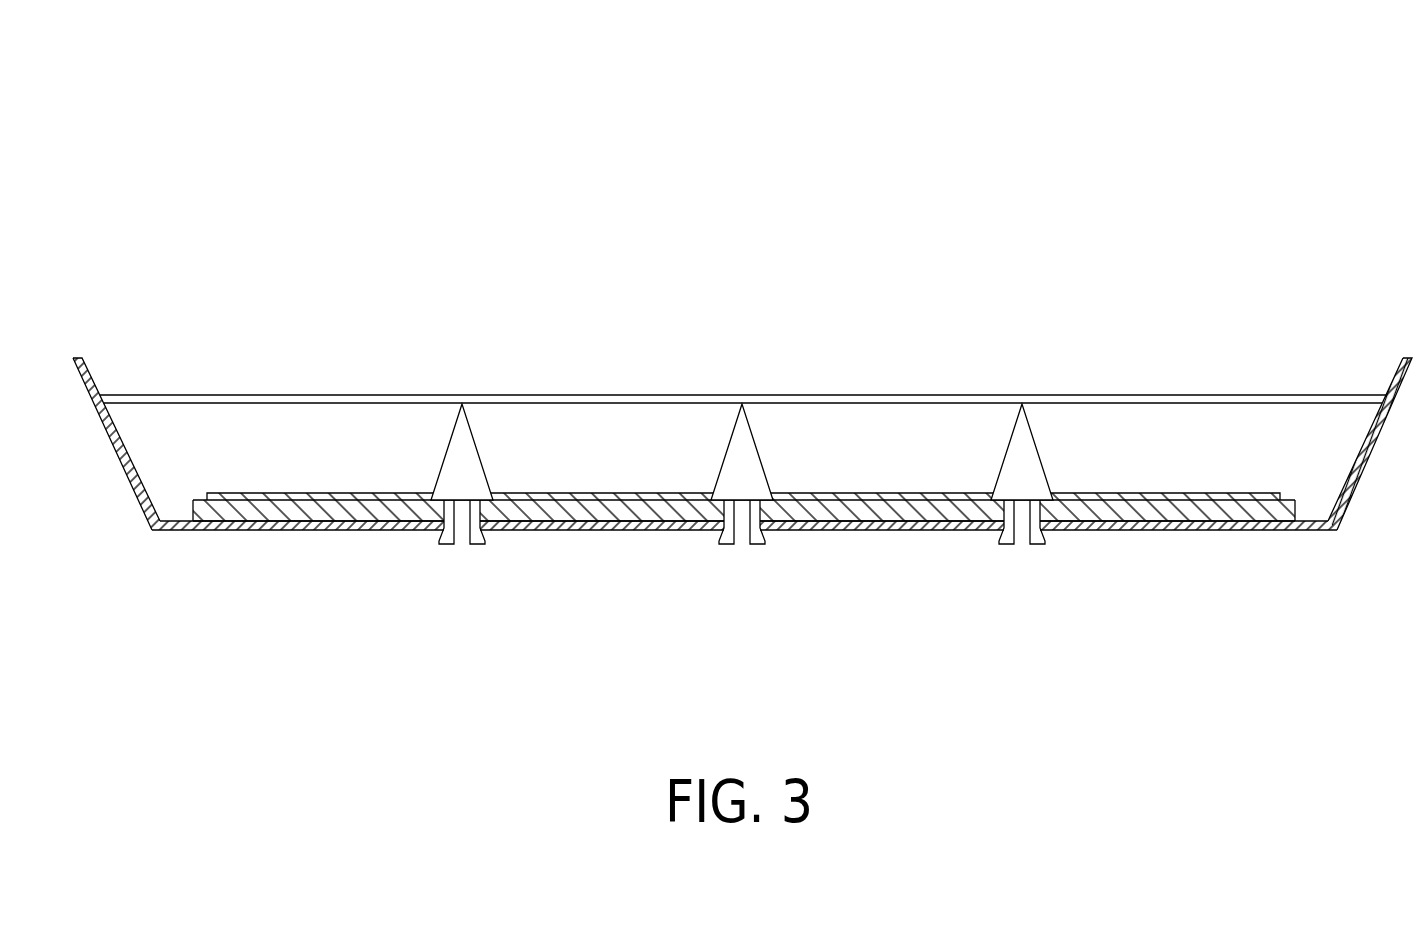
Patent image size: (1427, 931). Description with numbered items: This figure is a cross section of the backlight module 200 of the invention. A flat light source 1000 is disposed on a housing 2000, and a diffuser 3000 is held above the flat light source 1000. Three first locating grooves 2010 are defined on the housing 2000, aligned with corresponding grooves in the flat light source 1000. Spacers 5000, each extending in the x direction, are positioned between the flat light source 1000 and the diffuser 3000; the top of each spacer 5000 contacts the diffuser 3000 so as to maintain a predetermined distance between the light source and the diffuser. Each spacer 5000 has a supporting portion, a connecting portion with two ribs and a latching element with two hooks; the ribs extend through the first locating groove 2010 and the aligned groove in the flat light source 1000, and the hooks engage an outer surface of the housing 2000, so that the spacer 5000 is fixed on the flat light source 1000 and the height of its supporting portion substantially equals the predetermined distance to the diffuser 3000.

The light source module 200 is at (178, 80).
The flat light source 1000 is at (585, 512).
The housing 2000 is at (317, 532).
The first locating groove 2010 is at (461, 533).
The diffuser 3000 is at (294, 395).
The spacer 5000 is at (481, 466).